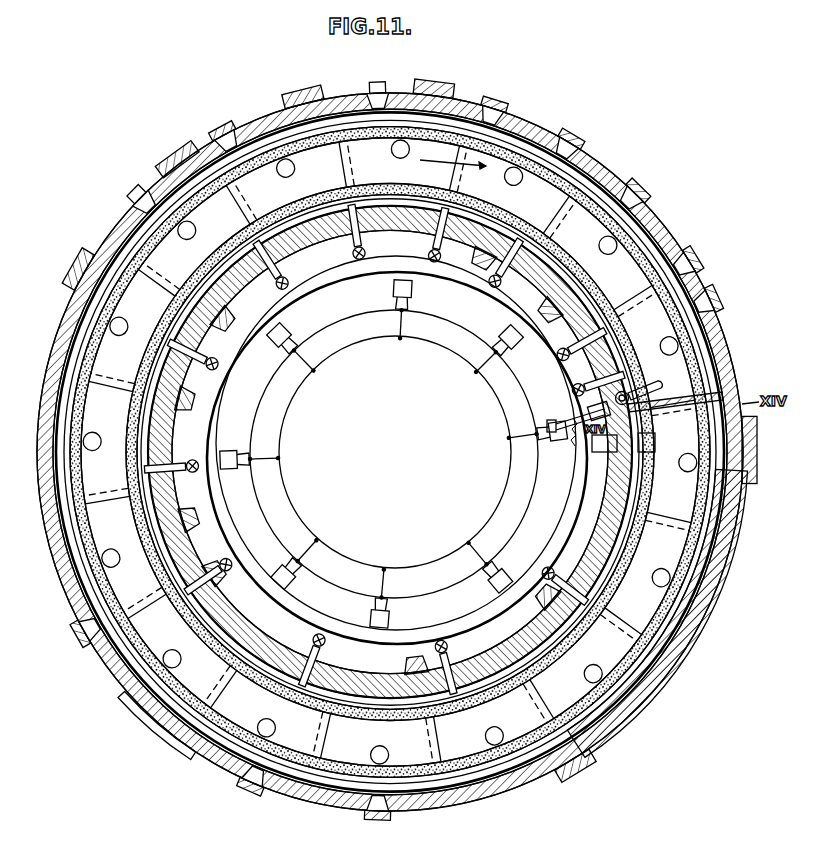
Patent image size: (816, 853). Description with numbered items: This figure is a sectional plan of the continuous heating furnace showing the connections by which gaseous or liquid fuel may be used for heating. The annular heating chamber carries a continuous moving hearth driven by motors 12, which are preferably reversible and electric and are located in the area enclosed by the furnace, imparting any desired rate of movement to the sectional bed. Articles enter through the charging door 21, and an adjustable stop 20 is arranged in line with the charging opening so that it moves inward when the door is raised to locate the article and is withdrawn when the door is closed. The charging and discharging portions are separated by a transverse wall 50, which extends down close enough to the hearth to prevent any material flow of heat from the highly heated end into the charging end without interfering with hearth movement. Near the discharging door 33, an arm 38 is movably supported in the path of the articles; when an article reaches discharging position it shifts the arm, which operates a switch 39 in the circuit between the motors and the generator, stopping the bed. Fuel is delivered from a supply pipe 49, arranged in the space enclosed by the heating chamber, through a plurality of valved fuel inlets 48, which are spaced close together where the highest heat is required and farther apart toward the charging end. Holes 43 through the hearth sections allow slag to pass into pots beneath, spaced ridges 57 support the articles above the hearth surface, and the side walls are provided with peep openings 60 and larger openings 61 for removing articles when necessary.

The motors 12 is at (393, 292).
The adjustable stop 20 is at (656, 443).
The charging door 21 is at (748, 470).
The discharging door 33 is at (726, 306).
The arm 38 is at (650, 386).
The switch 39 is at (546, 426).
The holes 43 is at (392, 154).
The valved fuel inlets 48 is at (355, 254).
The supply pipe 49 is at (212, 425).
The transverse wall 50 is at (718, 386).
The spaced ridges 57 is at (234, 240).
The peep openings 60 is at (96, 640).
The openings 61 is at (181, 170).